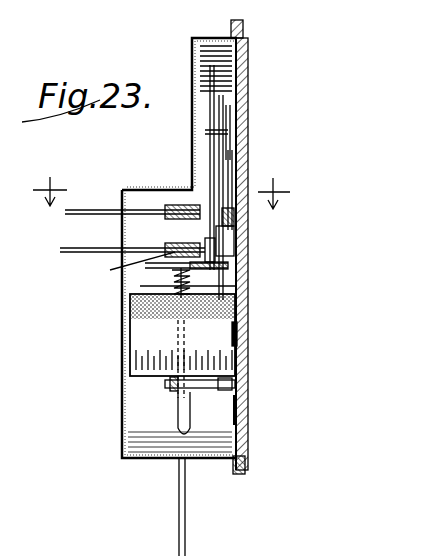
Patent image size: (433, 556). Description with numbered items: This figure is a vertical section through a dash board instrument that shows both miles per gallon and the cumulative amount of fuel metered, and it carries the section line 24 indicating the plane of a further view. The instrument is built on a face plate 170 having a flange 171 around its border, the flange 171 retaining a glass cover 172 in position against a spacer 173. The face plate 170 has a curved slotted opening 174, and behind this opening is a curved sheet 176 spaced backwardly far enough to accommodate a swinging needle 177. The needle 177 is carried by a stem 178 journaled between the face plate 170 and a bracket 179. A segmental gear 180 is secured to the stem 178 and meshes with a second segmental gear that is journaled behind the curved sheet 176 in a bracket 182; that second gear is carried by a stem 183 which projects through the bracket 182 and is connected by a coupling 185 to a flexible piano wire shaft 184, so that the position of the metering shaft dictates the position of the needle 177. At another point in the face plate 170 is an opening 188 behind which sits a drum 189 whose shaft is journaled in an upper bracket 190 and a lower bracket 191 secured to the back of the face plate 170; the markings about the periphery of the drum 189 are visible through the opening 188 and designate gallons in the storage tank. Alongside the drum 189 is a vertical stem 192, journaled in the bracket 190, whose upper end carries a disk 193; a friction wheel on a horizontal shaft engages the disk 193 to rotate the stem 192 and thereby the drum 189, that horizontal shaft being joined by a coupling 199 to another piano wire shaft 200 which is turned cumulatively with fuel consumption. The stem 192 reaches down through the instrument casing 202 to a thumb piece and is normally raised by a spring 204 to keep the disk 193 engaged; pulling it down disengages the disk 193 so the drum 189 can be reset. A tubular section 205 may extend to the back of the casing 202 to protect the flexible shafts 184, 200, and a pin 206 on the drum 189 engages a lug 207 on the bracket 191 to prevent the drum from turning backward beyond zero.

The section line 24— 24 is at (145, 187).
The face plate 170 is at (240, 410).
The flange 171 is at (245, 468).
The glass cover 172 is at (242, 345).
The spacer 173 is at (242, 38).
The curved slotted opening 174 is at (228, 228).
The curved sheet 176 is at (223, 215).
The needle 177 is at (237, 132).
The stem 178 is at (232, 118).
The bracket 179 is at (205, 78).
The segmental gear 180 is at (212, 141).
The bracket 182 is at (208, 238).
The stem 183 is at (190, 206).
The shaft 184 is at (66, 212).
The coupling 185 is at (165, 208).
The opening 188 is at (236, 332).
The drum 189 is at (130, 326).
The upper bracket 190 is at (225, 282).
The lower bracket 191 is at (198, 398).
The vertical stem 192 is at (187, 508).
The disk 193 is at (146, 266).
The coupling 199 is at (175, 250).
The shaft 200 is at (66, 252).
The instrument casing 202 is at (142, 462).
The spring 204 is at (140, 300).
The tubular section 205 is at (112, 270).
The pin 206 is at (168, 385).
The lug 207 is at (233, 384).